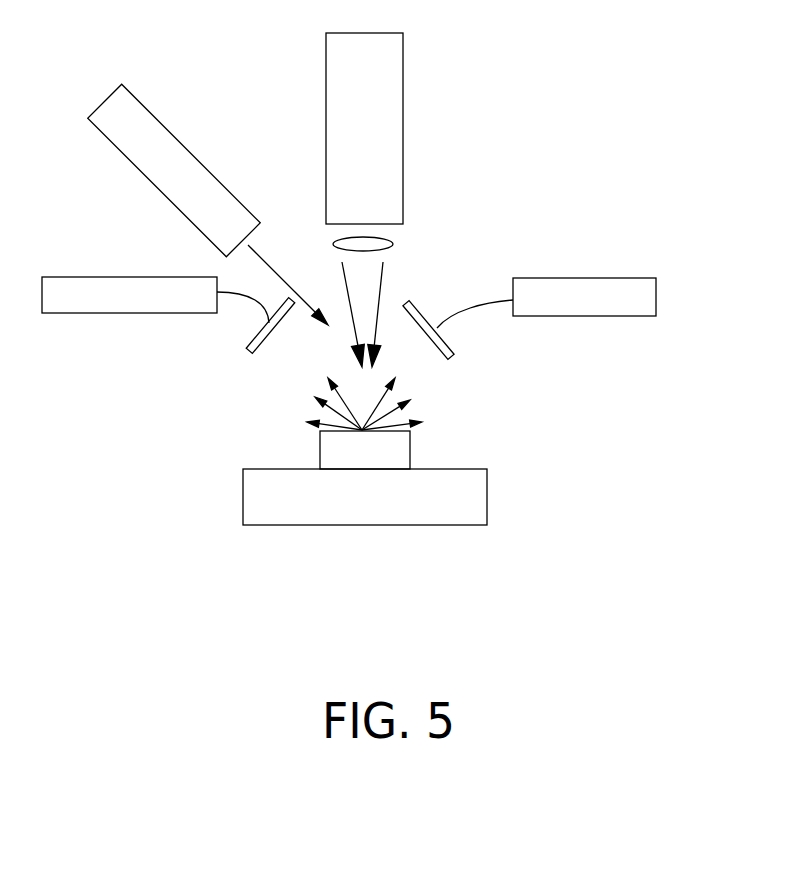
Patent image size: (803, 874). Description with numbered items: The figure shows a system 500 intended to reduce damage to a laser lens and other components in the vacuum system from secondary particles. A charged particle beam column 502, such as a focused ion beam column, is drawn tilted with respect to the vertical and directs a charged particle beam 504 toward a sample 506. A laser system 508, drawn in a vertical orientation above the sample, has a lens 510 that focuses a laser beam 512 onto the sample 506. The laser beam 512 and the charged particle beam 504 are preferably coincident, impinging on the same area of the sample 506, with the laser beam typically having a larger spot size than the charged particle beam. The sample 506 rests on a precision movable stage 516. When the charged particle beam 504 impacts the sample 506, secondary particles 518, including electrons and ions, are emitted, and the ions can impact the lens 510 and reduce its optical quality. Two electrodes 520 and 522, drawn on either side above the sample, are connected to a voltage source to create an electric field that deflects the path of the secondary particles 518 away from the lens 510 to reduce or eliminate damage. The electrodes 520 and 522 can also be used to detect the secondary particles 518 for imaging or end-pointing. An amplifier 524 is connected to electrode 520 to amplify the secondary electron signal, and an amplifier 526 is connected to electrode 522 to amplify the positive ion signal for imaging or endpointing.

The system 500 is at (211, 61).
The charged particle beam column 502 is at (114, 143).
The charged particle beam 504 is at (320, 315).
The sample 506 is at (410, 460).
The laser system 508 is at (403, 118).
The lens 510 is at (392, 241).
The laser beam 512 is at (384, 276).
The precision movable stage 516 is at (487, 480).
The secondary particles 518 is at (333, 396).
The electrode 520 is at (249, 340).
The electrode 522 is at (454, 349).
The amplifier 524 is at (165, 278).
The amplifier 526 is at (528, 278).